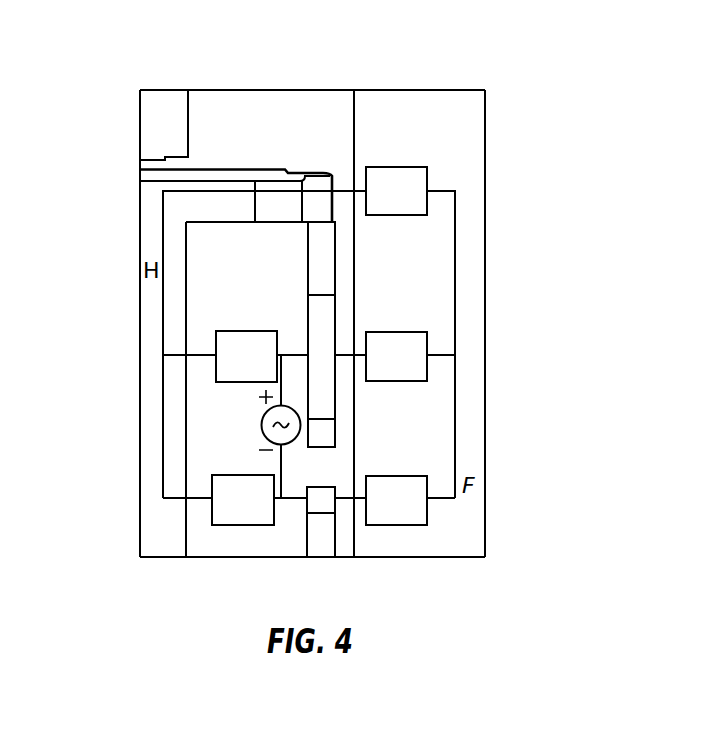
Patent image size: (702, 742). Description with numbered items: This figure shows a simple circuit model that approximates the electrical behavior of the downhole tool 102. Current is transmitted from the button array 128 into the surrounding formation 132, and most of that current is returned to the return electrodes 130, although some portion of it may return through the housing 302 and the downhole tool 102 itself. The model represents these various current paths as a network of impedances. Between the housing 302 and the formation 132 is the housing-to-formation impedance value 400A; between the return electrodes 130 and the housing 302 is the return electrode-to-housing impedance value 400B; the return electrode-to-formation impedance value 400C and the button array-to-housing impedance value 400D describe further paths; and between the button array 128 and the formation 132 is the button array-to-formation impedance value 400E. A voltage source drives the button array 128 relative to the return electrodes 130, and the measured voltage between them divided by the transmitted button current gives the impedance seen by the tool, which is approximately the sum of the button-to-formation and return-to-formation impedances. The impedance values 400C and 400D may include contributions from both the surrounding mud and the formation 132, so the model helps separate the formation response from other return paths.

The downhole tool 102 is at (165, 110).
The housing 302 is at (142, 233).
The housing-to-formation impedance value 400A is at (392, 168).
The return electrode-to-housing impedance value 400B is at (238, 332).
The return electrode-to-formation impedance value 400C is at (243, 525).
The button array-to-housing impedance value 400D is at (372, 333).
The button array-to-formation impedance value 400E is at (372, 477).
The return electrodes 130 is at (330, 315).
The formation 132 is at (468, 423).
The button array 128 is at (321, 503).